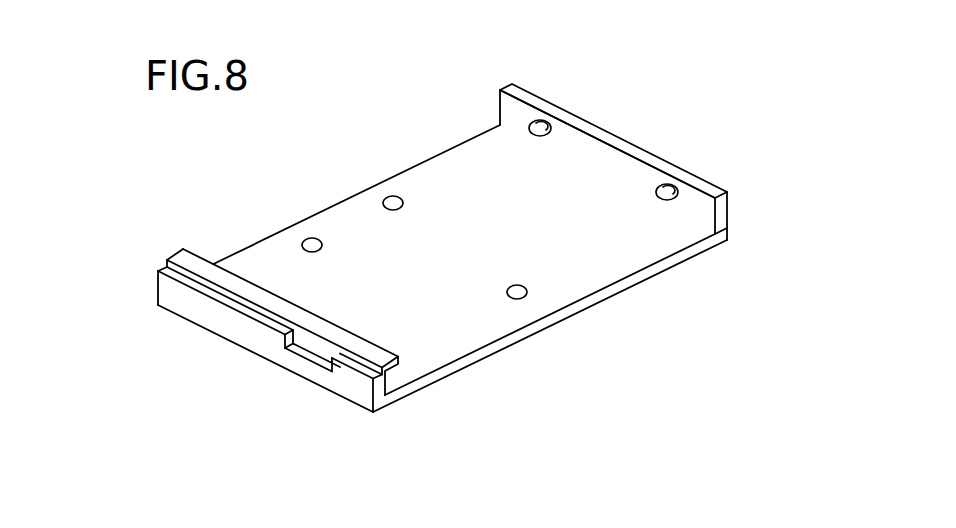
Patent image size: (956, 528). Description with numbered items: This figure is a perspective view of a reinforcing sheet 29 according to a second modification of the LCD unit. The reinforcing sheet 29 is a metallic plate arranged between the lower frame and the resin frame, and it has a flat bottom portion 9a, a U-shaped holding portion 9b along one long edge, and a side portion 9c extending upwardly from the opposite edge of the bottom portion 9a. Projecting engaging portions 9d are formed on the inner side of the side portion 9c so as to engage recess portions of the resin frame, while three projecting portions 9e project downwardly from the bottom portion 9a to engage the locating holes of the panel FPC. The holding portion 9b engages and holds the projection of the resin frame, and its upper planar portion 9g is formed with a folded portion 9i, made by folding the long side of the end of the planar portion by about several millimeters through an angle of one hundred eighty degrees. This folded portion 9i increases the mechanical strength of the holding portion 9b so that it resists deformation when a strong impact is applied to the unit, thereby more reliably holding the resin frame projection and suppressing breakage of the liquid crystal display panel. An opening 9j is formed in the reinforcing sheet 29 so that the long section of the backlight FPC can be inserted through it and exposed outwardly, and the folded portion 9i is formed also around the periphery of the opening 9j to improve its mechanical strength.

The bottom portion 9a is at (585, 267).
The U-shaped holding portion 9b is at (222, 322).
The side portion 9c is at (612, 167).
The projecting engaging portions 9d is at (541, 121).
The projecting portions 9e is at (311, 238).
The planar portion 9g is at (213, 290).
The folded portion 9i is at (278, 303).
The opening 9j is at (306, 357).
The reinforcing sheet 29 is at (343, 227).